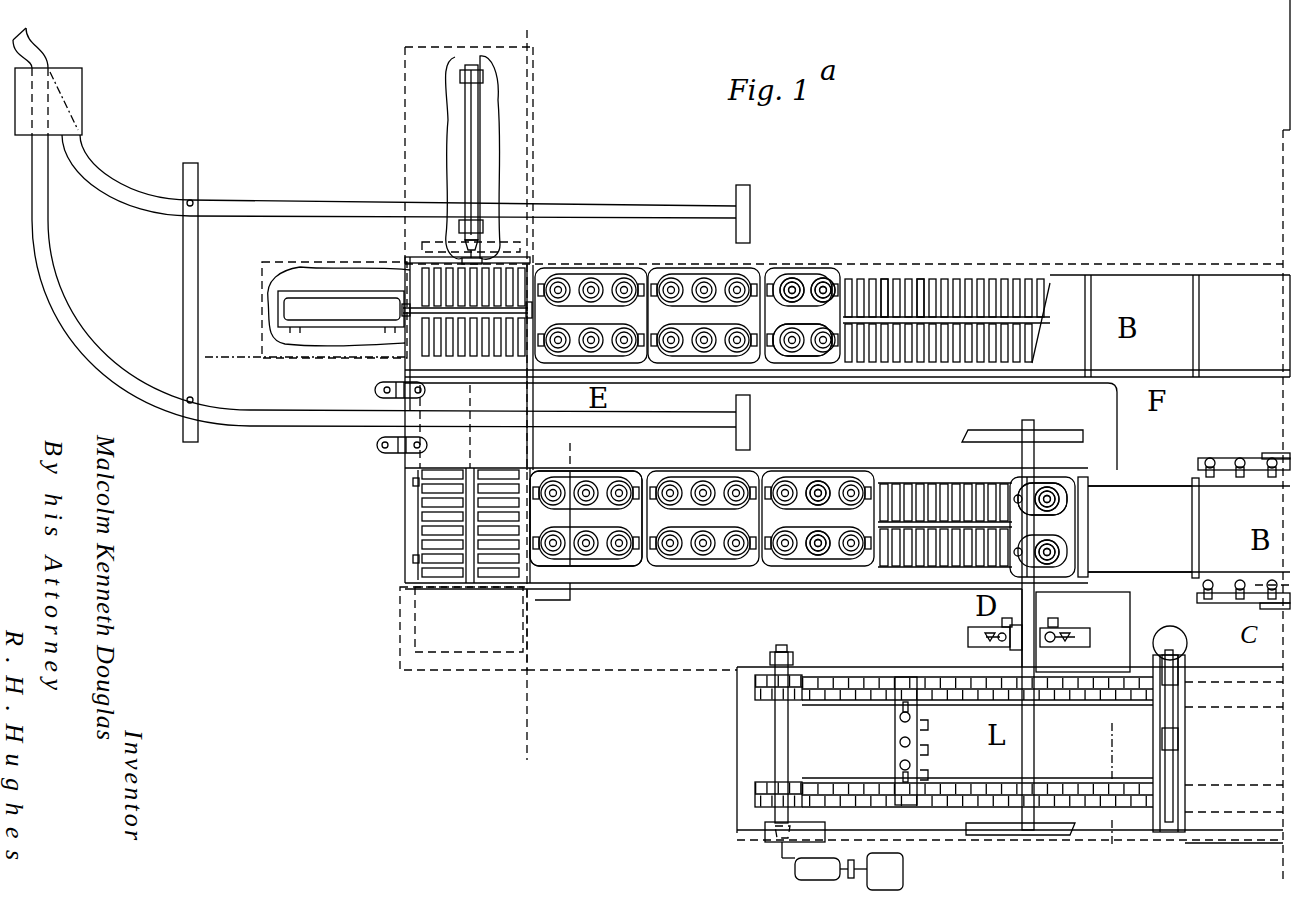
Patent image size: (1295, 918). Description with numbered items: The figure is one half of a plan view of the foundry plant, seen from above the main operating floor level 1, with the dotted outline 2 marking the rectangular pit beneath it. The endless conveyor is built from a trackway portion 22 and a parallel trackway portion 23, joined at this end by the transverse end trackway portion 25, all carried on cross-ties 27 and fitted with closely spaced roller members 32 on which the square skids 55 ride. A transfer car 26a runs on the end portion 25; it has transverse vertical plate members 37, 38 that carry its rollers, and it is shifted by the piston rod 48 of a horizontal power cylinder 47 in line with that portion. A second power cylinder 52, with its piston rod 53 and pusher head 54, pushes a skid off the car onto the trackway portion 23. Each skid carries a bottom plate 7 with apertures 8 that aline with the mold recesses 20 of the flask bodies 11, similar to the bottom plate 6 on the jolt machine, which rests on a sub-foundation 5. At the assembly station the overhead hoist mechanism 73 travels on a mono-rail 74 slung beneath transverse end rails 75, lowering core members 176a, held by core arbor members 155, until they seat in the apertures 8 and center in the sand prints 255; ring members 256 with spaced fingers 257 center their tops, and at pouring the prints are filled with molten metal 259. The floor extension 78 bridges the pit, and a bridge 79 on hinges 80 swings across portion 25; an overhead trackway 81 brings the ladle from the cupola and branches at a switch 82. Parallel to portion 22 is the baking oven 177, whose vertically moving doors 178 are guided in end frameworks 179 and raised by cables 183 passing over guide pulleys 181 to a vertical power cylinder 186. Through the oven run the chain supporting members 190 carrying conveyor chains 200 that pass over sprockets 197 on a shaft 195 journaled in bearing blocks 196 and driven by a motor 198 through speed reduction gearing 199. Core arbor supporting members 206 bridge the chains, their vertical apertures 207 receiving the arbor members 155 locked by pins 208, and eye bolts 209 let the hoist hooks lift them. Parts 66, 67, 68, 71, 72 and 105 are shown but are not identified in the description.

The overhead trackway 81 is at (40, 53).
The switch 82 is at (72, 93).
The power cylinder 47 is at (468, 131).
The piston rod 48 is at (465, 222).
The vertical plate member 38 is at (427, 257).
The vertical plate member 37 is at (472, 355).
The transfer car 26a is at (517, 277).
The pusher head 54 is at (533, 312).
The power cylinder 52 is at (319, 300).
The piston rod 53 is at (405, 340).
The hinges 80 is at (378, 393).
The bridge 79 is at (512, 403).
The end trackway portion 25 is at (416, 513).
The bottom plate 7 is at (757, 277).
The molten metal 259 is at (800, 285).
The cup holder 105 is at (775, 335).
The flask body 11 is at (680, 303).
The core members 176a is at (1093, 553).
The trackway portion 23 is at (988, 287).
The roller members 32 is at (917, 287).
The trackway portion 22 is at (935, 562).
The apertures 8 is at (1070, 499).
The sand prints 255 is at (1050, 498).
The fingers 257 is at (810, 492).
The ring members 256 is at (823, 492).
The mold recesses 20 is at (704, 550).
The skids 55 is at (657, 566).
The cross-ties 27 is at (1200, 311).
The dotted outline 2 is at (1152, 265).
The sub-foundation 5 is at (498, 37).
The main operating floor level 1 is at (218, 342).
The bottom plate 6 is at (1130, 740).
The end rails 75 is at (1068, 430).
The mono-rail 74 is at (1034, 730).
The floor extension 78 is at (761, 426).
The bar 68 is at (1226, 460).
The plate 67 is at (1270, 453).
The bolt 72 is at (1238, 474).
The bolt 71 is at (1272, 476).
The plate 66 is at (1277, 610).
The power cylinder 186 is at (1162, 640).
The guide pulleys 181 is at (1180, 656).
The cable 183 is at (1173, 697).
The end frameworks 179 is at (1186, 719).
The doors 178 is at (1172, 765).
The baking oven 177 is at (1234, 788).
The shaft 195 is at (775, 746).
The bearing blocks 196 is at (790, 665).
The sprockets 197 is at (768, 703).
The chain supporting member 190 is at (841, 783).
The conveyor chains 200 is at (972, 778).
The eye bolts 209 is at (968, 635).
The core arbor members 155 is at (900, 716).
The core arbor supporting members 206 is at (900, 741).
The vertical apertures 207 is at (900, 764).
The pins 208 is at (940, 755).
The hoist mechanism 73 is at (1050, 648).
The speed reduction gearing 199 is at (800, 867).
The motor 198 is at (893, 880).